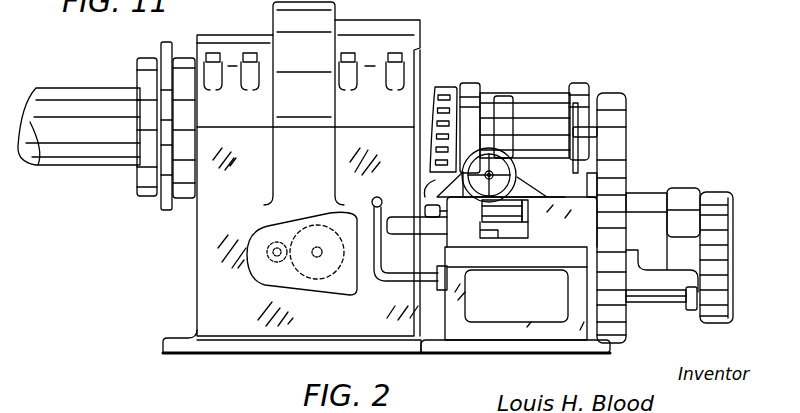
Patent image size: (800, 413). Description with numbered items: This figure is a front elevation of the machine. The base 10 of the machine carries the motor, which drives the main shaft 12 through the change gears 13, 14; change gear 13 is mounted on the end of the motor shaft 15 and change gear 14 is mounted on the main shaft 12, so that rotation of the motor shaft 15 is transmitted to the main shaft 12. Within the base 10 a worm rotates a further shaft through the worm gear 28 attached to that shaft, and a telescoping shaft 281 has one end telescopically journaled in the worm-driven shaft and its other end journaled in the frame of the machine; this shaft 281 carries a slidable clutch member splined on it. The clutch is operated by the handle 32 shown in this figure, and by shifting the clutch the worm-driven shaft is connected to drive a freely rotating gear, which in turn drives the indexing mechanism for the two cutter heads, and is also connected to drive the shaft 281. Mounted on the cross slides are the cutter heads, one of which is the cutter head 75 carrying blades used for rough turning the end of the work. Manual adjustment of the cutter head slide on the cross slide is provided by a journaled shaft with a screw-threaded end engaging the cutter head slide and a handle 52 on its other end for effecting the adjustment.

The base 10 is at (212, 238).
The main shaft 12 is at (327, 278).
The change gear 13 is at (277, 262).
The change gear 14 is at (316, 278).
The motor shaft 15 is at (272, 246).
The handle 32 is at (380, 199).
The handle 52 is at (477, 203).
The cutter head 75 is at (441, 87).
The shaft 281 is at (672, 304).
The worm gear 28 is at (661, 310).